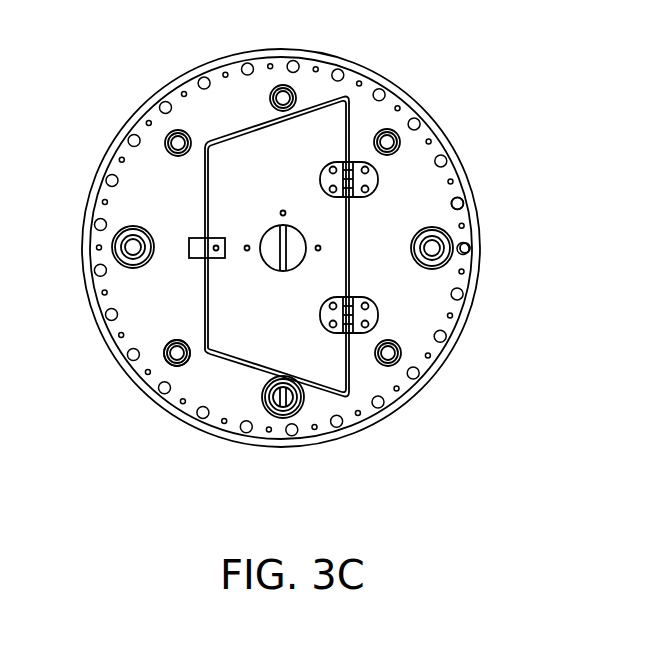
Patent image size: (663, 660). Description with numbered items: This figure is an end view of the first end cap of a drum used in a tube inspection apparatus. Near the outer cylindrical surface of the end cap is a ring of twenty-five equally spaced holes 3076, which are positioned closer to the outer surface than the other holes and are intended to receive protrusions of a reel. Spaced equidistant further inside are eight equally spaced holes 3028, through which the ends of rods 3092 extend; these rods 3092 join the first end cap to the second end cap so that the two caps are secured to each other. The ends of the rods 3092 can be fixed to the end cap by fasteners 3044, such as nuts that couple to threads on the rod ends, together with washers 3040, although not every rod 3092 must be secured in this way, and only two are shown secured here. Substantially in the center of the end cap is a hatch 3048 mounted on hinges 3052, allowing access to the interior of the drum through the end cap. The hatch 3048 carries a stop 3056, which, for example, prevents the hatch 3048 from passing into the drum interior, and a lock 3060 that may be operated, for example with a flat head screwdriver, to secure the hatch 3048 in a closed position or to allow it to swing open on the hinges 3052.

The holes 3028 is at (170, 132).
The washers 3040 is at (278, 415).
The fasteners 3044 is at (133, 248).
The hatch 3048 is at (263, 138).
The hinges 3052 is at (380, 180).
The stop 3056 is at (198, 238).
The lock 3060 is at (268, 273).
The holes 3076 is at (470, 202).
The rods 3092 is at (168, 360).